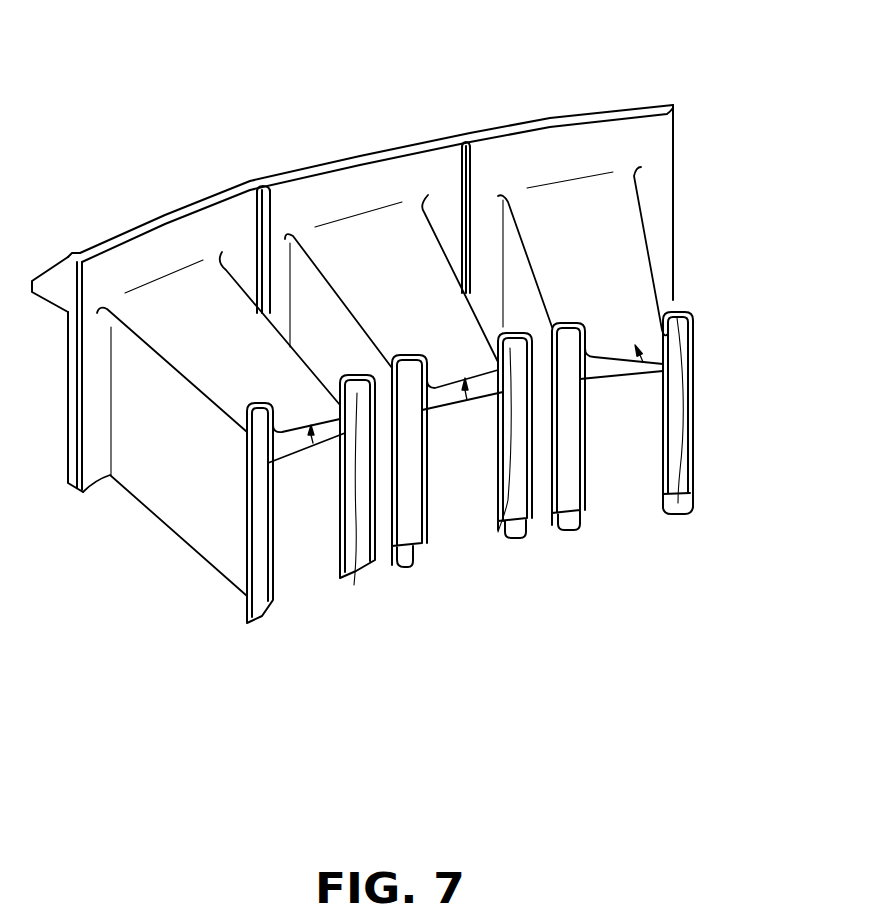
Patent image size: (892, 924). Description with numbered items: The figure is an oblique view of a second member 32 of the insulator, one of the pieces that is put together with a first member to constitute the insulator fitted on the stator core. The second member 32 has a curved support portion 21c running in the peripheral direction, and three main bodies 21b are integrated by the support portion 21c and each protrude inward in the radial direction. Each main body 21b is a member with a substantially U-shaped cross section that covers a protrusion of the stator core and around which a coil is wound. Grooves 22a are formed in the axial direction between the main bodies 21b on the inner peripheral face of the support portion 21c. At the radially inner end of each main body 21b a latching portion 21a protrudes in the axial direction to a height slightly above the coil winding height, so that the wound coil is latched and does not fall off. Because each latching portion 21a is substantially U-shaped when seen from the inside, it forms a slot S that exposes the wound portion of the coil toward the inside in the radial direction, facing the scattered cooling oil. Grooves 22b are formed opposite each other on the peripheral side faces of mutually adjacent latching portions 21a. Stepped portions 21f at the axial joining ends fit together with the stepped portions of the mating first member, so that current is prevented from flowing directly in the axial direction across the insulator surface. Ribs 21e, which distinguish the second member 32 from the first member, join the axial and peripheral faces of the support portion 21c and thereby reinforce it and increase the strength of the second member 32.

The second member 32 is at (118, 92).
The support portion 21c is at (372, 140).
The rib 21e is at (238, 178).
The groove 22a is at (262, 188).
The main body 21b is at (608, 217).
The groove 22b is at (386, 520).
The stepped portion 21f is at (355, 578).
The slot S is at (354, 585).
The latching portion 21a is at (267, 432).